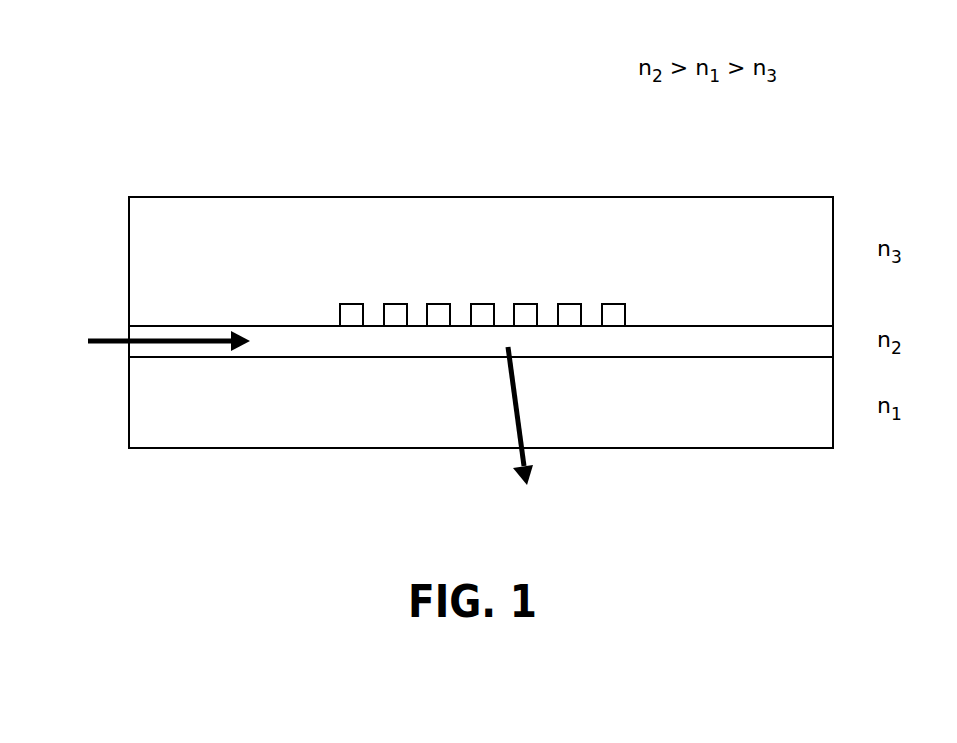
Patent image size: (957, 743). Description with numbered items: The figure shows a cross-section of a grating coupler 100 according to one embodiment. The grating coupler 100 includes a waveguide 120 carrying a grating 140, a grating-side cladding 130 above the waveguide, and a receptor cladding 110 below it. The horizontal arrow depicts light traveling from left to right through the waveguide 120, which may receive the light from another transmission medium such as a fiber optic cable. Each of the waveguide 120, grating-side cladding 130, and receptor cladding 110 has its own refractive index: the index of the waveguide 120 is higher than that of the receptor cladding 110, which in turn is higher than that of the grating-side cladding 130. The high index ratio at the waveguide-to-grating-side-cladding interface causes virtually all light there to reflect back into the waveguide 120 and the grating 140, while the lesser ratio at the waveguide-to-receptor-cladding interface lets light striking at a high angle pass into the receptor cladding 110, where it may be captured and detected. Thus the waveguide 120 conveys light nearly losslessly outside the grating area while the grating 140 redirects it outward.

The grating coupler 100 is at (92, 74).
The receptor cladding 110 is at (148, 418).
The waveguide 120 is at (297, 340).
The grating-side cladding 130 is at (172, 270).
The grating 140 is at (438, 298).